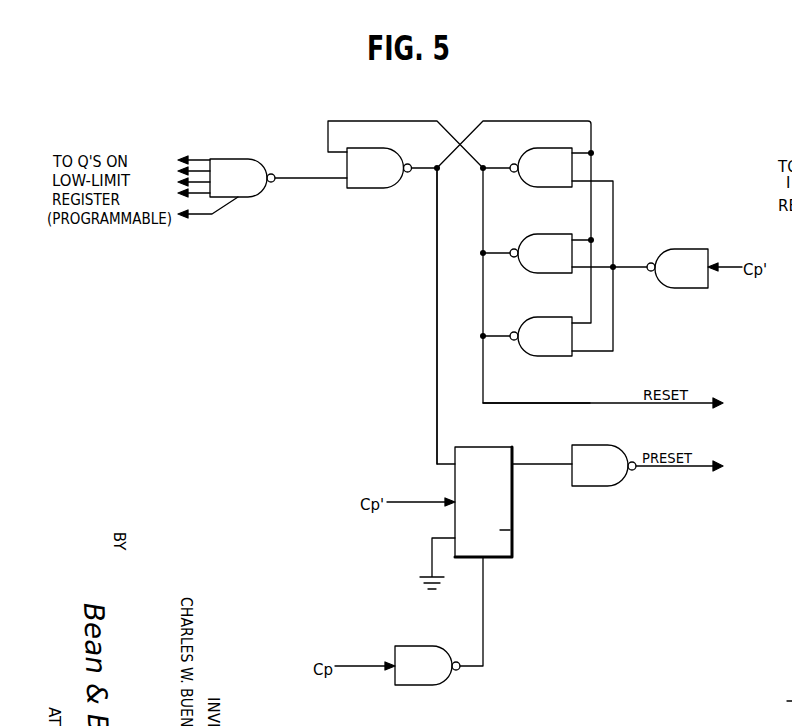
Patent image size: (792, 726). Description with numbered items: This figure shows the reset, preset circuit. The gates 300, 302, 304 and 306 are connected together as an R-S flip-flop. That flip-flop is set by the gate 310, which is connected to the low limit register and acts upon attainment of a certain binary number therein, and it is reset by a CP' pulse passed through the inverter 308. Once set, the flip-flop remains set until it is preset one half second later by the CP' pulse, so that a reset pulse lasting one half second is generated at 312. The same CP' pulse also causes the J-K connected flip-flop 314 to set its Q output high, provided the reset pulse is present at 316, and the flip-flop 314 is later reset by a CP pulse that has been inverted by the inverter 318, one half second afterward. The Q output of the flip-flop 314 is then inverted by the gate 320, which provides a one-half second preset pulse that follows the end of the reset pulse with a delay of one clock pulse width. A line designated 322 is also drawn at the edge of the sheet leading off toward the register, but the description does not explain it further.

The gate 300 is at (373, 188).
The gate 302 is at (563, 153).
The gate 304 is at (557, 236).
The gate 306 is at (552, 318).
The inverter 308 is at (693, 252).
The gate 310 is at (243, 159).
The reset pulse output 312 is at (595, 403).
The J-K connected flip-flop 314 is at (502, 502).
The reset pulse input 316 is at (433, 390).
The inverter 318 is at (433, 672).
The gate 320 is at (602, 480).
The line to register 322 is at (777, 705).